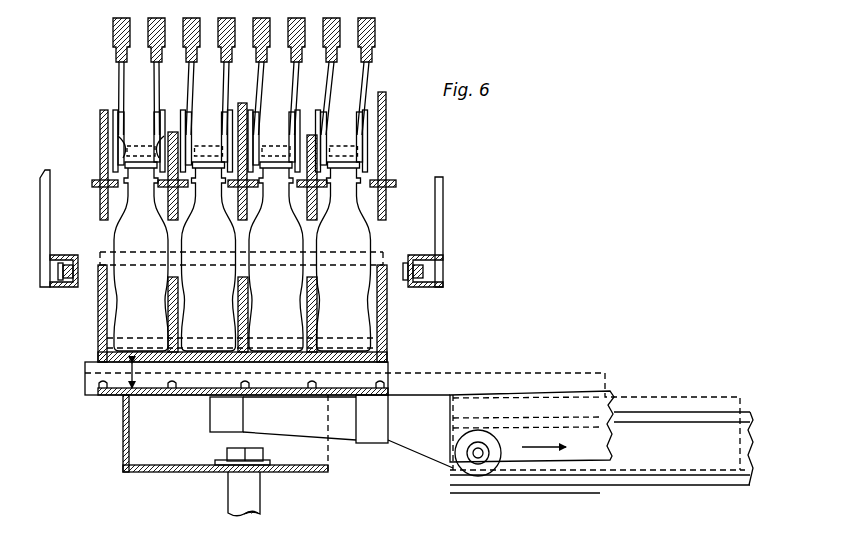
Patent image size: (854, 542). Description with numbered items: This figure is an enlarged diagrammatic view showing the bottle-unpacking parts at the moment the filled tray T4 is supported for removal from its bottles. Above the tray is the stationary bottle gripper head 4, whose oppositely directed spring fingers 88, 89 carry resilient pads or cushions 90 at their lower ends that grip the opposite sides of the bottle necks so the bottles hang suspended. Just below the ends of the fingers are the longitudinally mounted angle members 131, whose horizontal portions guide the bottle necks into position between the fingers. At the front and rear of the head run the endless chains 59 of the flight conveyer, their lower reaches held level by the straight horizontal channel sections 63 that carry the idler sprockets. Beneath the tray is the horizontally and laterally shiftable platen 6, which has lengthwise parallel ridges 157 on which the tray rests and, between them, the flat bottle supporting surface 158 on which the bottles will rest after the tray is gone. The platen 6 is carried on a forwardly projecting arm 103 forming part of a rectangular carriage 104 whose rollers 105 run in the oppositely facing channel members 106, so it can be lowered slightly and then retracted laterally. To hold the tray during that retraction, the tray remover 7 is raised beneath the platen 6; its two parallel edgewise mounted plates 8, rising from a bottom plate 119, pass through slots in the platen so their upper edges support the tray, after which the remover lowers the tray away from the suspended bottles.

The stationary bottle gripper head 4 is at (390, 78).
The spring fingers 88 is at (118, 74).
The spring fingers 89 is at (158, 100).
The resilient pads or cushions 90 is at (124, 147).
The angle members 131 is at (304, 203).
The endless chains 59 is at (58, 268).
The channel sections 63 is at (60, 289).
The bottle case T4 is at (388, 311).
The bottle supporting surface 158 is at (200, 350).
The edgewise mounted plates 8 is at (85, 380).
The tray remover 7 is at (178, 476).
The ridges 157 is at (262, 397).
The arm 103 is at (347, 438).
The bottom plate 119 is at (283, 473).
The platen 6 is at (376, 372).
The carriage 104 is at (597, 447).
The rollers 105 is at (506, 456).
The channel members 106 is at (683, 470).